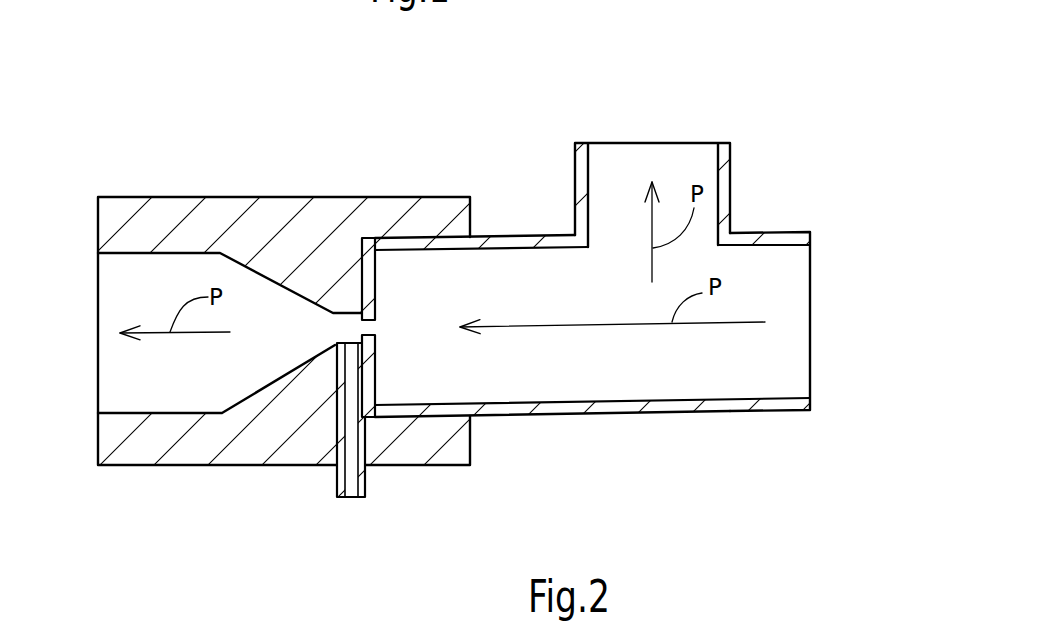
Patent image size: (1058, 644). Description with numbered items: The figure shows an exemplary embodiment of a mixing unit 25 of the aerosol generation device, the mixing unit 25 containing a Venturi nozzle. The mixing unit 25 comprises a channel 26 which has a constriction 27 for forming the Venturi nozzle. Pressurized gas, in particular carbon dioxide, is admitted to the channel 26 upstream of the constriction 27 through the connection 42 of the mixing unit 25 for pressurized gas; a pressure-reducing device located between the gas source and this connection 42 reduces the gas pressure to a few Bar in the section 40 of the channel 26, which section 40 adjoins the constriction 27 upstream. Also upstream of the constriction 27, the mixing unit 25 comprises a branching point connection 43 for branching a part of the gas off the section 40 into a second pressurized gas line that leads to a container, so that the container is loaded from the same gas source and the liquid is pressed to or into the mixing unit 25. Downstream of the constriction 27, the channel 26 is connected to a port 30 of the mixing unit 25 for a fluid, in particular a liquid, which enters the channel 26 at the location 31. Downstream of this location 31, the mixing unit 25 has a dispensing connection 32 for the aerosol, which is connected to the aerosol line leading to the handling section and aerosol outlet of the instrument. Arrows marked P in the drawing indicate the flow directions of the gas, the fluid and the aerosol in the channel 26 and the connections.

The mixing unit 25 is at (529, 322).
The channel 26 is at (529, 322).
The section of the channel 40 is at (510, 280).
The branching point connection 43 is at (714, 124).
The connection for pressurized gas 42 is at (824, 271).
The constriction 27 is at (402, 332).
The dispensing connection 32 is at (90, 276).
The location where the fluid enters the channel 31 is at (349, 342).
The port for a fluid 30 is at (350, 516).